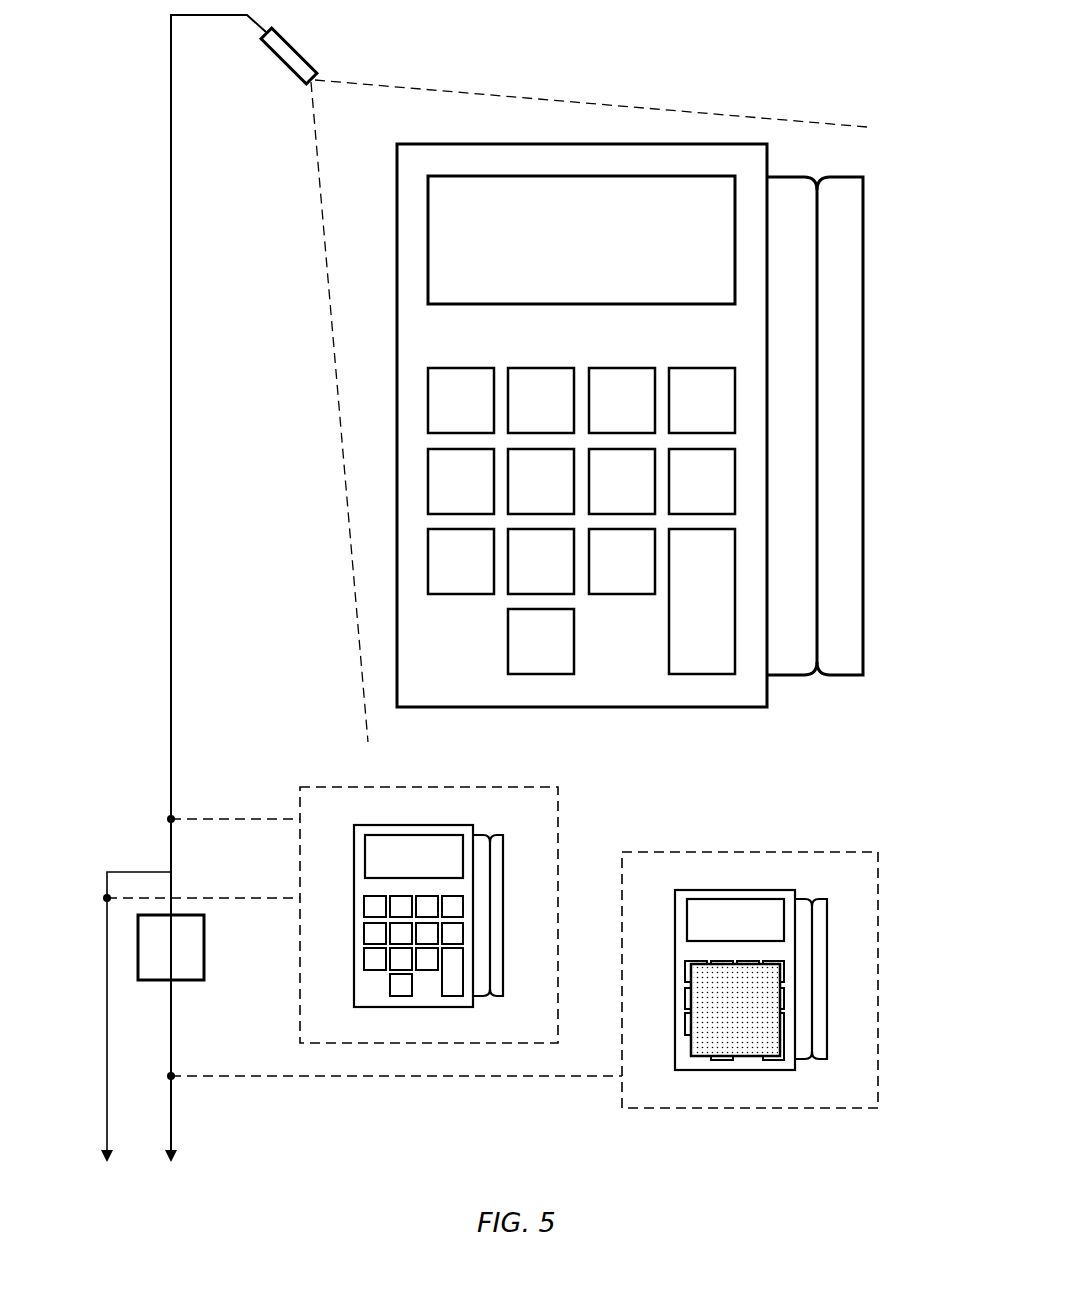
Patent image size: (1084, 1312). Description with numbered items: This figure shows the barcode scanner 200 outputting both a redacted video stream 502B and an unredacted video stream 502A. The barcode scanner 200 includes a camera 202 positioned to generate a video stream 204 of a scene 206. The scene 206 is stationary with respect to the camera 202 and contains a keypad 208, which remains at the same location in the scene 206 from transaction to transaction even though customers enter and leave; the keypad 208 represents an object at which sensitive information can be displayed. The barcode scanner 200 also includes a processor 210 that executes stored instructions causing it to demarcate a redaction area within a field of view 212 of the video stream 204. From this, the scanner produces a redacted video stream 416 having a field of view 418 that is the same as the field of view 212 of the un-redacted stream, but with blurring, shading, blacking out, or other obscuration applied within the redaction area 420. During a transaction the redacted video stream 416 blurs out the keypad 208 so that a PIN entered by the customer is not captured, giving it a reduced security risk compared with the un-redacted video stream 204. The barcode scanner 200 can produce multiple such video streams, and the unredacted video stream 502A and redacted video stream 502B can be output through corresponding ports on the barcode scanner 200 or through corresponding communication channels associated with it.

The barcode scanner 200 is at (146, 70).
The camera 202 is at (294, 46).
The video stream 204 is at (172, 848).
The scene 206 is at (570, 380).
The keypad 208 is at (410, 516).
The processor 210 is at (205, 945).
The field of view 212 is at (559, 815).
The redacted video stream 416 is at (172, 1040).
The field of view 418 is at (750, 982).
The redaction area 420 is at (740, 1034).
The unredacted video stream 502A is at (108, 1137).
The redacted video stream 502B is at (172, 1126).